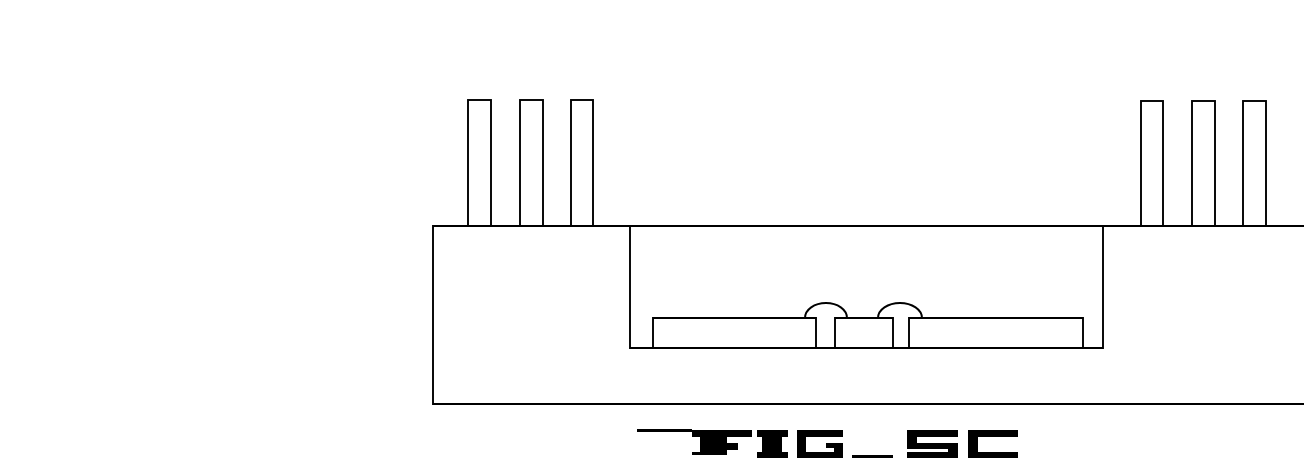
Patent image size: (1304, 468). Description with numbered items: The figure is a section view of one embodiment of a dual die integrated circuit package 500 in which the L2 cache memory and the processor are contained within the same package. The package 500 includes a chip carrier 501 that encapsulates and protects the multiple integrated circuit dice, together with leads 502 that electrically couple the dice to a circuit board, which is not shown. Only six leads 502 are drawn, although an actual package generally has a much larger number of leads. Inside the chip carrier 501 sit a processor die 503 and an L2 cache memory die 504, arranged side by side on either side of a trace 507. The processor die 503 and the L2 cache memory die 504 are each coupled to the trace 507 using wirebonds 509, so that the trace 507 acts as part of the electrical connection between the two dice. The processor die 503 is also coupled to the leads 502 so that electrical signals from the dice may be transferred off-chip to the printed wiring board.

The package 500 is at (358, 69).
The chip carrier 501 is at (838, 393).
The leads 502 is at (599, 88).
The processor die 503 is at (738, 318).
The L2 cache memory die 504 is at (985, 318).
The trace 507 is at (873, 340).
The wirebonds 509 is at (890, 301).